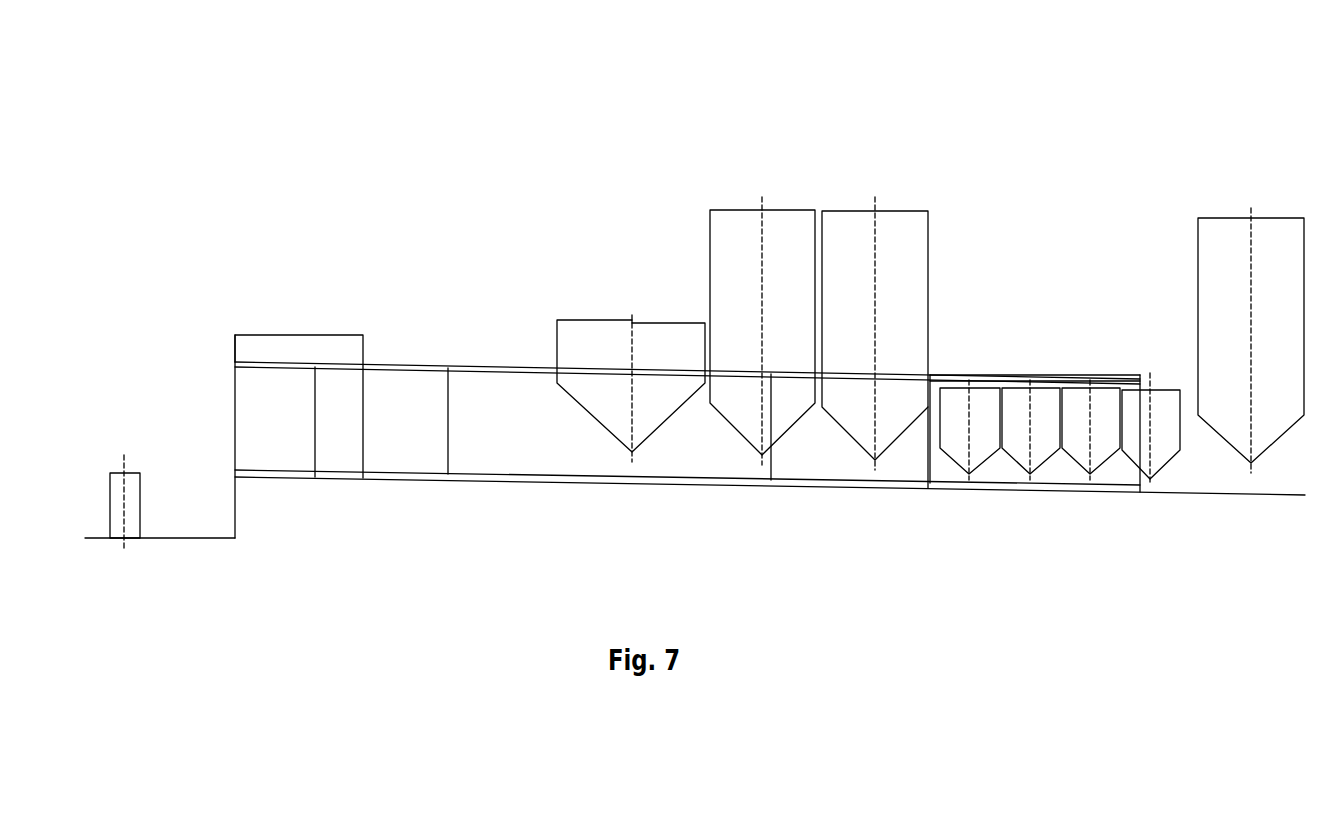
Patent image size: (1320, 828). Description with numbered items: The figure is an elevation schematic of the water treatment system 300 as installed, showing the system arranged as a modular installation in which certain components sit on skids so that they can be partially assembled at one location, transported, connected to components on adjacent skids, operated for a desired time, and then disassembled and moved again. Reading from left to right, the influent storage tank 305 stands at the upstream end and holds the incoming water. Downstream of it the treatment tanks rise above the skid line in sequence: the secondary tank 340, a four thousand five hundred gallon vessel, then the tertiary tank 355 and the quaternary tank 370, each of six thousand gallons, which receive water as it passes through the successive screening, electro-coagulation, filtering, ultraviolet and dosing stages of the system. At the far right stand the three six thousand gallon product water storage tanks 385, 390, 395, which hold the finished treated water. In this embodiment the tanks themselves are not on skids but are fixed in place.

The water treatment system 300 is at (314, 152).
The influent storage tank 305 is at (254, 418).
The secondary tank 340 is at (595, 333).
The tertiary tank 355 is at (738, 230).
The quaternary tank 370 is at (914, 233).
The product water storage tank 385 is at (1213, 234).
The product water storage tank 390 is at (1245, 305).
The product water storage tank 395 is at (1251, 305).